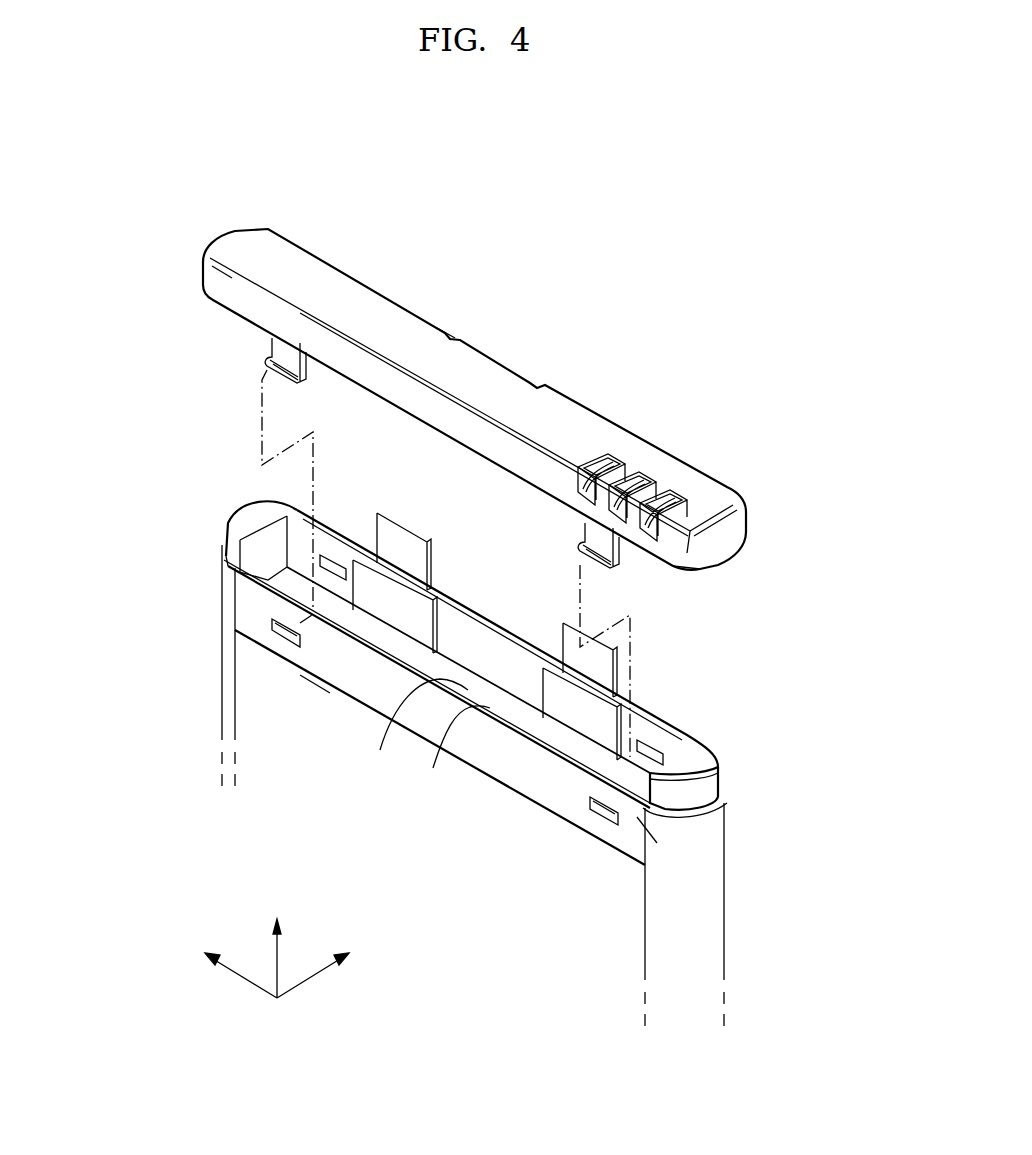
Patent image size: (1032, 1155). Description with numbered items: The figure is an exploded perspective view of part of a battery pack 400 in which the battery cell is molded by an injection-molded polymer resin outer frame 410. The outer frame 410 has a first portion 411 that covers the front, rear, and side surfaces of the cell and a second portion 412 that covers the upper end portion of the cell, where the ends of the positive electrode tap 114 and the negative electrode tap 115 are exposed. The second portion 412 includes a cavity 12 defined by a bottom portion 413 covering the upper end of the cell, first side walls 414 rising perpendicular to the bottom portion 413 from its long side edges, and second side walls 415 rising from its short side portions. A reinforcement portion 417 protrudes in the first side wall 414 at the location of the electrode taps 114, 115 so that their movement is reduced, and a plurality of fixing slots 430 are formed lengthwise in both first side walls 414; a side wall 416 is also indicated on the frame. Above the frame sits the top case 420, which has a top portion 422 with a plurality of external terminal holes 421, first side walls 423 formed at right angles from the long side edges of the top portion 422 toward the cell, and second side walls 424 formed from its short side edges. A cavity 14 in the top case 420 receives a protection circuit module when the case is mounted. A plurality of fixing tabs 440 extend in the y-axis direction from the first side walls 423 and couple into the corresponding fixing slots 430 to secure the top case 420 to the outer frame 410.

The battery pack 400 is at (130, 272).
The top case 420 is at (246, 226).
The external terminal holes 421 is at (643, 468).
The top portion 422 is at (388, 306).
The first side walls 423 is at (247, 300).
The second side walls 424 is at (735, 521).
The fixing tabs 440 is at (616, 553).
The cavity 14 is at (411, 419).
The outer frame 410 is at (853, 763).
The first portion 411 is at (617, 903).
The second portion 412 is at (733, 780).
The bottom portion 413 is at (417, 700).
The first side walls 414 is at (507, 637).
The second side walls 415 is at (243, 522).
The side wall 416 is at (715, 826).
The reinforcement portion 417 is at (345, 572).
The fixing slots 430 is at (272, 623).
The positive electrode tap 114 is at (428, 560).
The negative electrode tap 115 is at (617, 660).
The cavity 12 is at (513, 706).